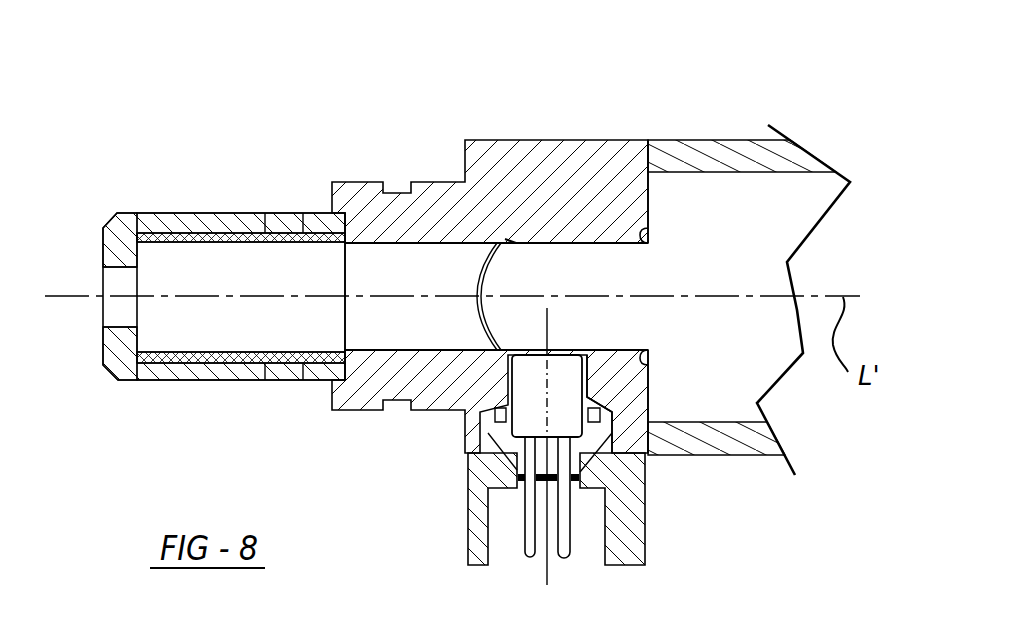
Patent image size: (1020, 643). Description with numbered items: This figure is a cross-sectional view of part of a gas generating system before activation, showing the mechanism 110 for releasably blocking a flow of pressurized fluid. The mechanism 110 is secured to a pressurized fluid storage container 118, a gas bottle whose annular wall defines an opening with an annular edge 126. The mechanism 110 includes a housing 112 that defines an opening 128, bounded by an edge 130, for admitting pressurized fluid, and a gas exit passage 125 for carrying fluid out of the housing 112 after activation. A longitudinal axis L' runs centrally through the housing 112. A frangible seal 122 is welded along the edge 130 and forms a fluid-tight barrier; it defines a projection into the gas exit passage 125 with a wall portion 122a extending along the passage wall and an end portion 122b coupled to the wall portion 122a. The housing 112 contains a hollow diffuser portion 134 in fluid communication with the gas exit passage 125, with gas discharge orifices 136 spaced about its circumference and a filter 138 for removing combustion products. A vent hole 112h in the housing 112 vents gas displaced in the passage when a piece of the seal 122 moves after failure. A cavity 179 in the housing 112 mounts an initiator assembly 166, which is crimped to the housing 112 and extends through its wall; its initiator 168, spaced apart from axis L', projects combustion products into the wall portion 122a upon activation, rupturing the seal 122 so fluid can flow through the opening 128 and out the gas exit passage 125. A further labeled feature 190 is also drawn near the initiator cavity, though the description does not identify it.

The mechanism 110 is at (638, 99).
The housing 112 is at (465, 140).
The vent hole 112h is at (115, 313).
The pressurized fluid storage container 118 is at (735, 150).
The frangible seal 122 is at (512, 240).
The wall portion 122a is at (553, 240).
The end portion 122b is at (443, 348).
The gas exit passage 125 is at (365, 338).
The annular edge 126 is at (650, 152).
The opening 128 is at (650, 273).
The edge 130 is at (650, 397).
The diffuser portion 134 is at (158, 214).
The gas discharge orifices 136 is at (275, 225).
The filter 138 is at (165, 332).
The initiator assembly 166 is at (644, 565).
The initiator 168 is at (522, 420).
The cavity 179 is at (513, 353).
The sensor cavity 190 is at (577, 350).